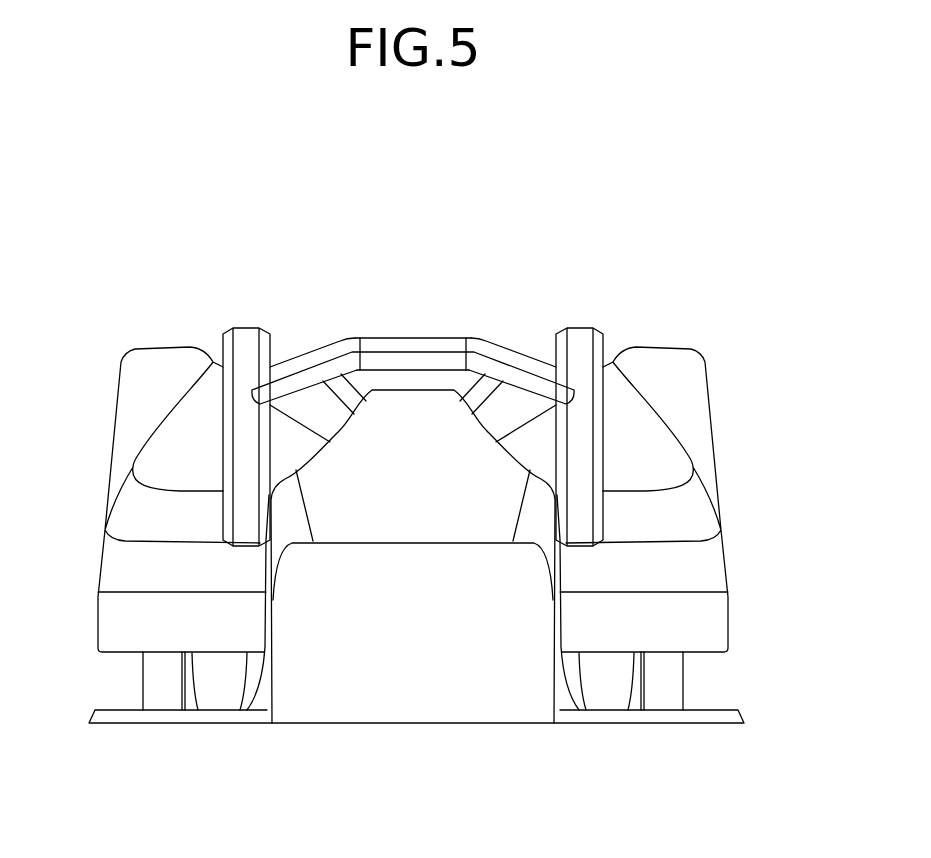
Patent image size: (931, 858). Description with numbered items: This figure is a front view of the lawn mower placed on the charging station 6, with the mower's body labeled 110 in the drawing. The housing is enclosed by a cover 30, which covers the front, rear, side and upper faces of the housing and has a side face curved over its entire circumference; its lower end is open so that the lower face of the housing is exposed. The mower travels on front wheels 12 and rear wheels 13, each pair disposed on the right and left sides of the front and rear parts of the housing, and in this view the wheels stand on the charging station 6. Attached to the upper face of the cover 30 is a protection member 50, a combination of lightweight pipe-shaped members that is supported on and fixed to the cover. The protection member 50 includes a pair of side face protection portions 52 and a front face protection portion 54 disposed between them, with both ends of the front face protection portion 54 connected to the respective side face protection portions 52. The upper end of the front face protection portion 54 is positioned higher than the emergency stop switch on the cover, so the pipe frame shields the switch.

The vehicle seat system 110 is at (517, 262).
The protection member 50 is at (300, 342).
The side face protection portions 52 is at (249, 327).
The front face protection portion 54 is at (416, 337).
The cover 30 is at (677, 394).
The charging station 6 is at (752, 708).
The front wheels 12 is at (226, 712).
The rear wheels 13 is at (168, 712).